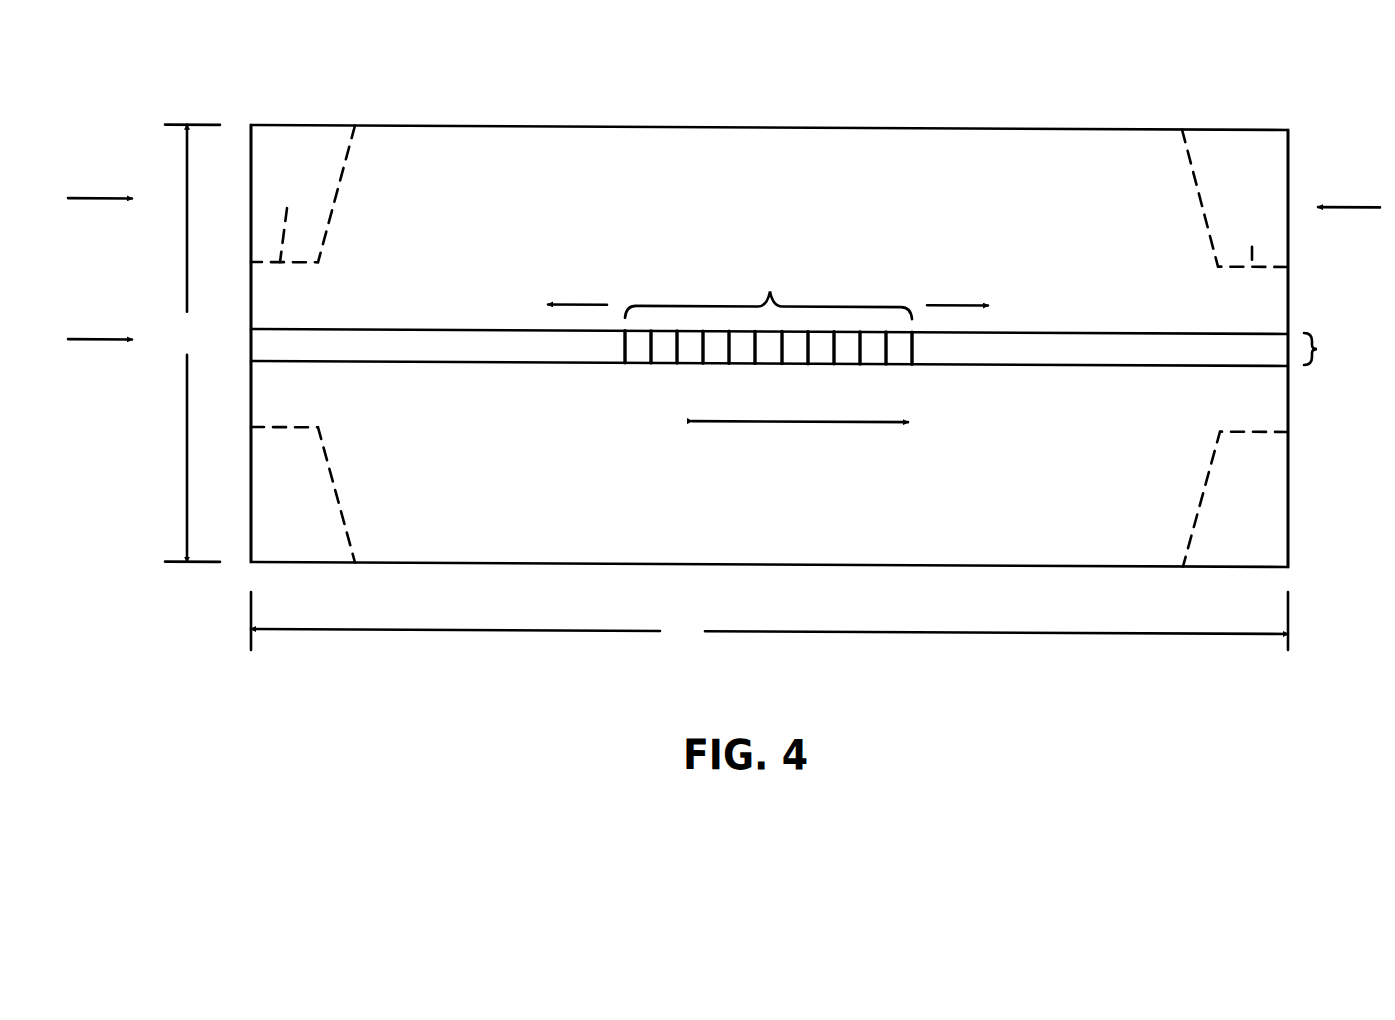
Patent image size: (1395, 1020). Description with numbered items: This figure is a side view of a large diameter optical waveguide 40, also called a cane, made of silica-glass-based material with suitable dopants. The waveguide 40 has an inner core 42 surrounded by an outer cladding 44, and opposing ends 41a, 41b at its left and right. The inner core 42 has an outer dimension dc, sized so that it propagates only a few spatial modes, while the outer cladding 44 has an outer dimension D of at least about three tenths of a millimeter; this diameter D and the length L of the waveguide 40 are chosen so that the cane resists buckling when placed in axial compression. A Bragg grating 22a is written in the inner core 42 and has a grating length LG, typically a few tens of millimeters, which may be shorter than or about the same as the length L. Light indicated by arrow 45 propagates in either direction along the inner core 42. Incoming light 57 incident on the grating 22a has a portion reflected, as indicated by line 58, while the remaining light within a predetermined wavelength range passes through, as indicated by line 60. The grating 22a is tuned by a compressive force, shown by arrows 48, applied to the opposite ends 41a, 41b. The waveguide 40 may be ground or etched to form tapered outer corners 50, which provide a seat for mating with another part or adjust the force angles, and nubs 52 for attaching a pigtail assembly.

The large diameter optical waveguide 40 is at (831, 126).
The inner core 42 is at (442, 329).
The outer cladding 44 is at (1060, 216).
The Bragg grating 22a is at (646, 362).
The arrow indicating light propagation 45 is at (805, 420).
The arrows indicating compressive force 48 is at (93, 199).
The tapered outer corners 50 is at (338, 192).
The nubs 52 is at (772, 221).
The incoming light 57 is at (93, 340).
The line indicating reflected light 58 is at (593, 303).
The line indicating transmitted light 60 is at (945, 302).
The opposing end 41a is at (250, 496).
The opposing end 41b is at (1289, 515).
The outer dimension of the waveguide D is at (192, 343).
The length of the waveguide L is at (769, 621).
The grating length LG is at (768, 287).
The outer dimension of the inner core dc is at (1319, 344).